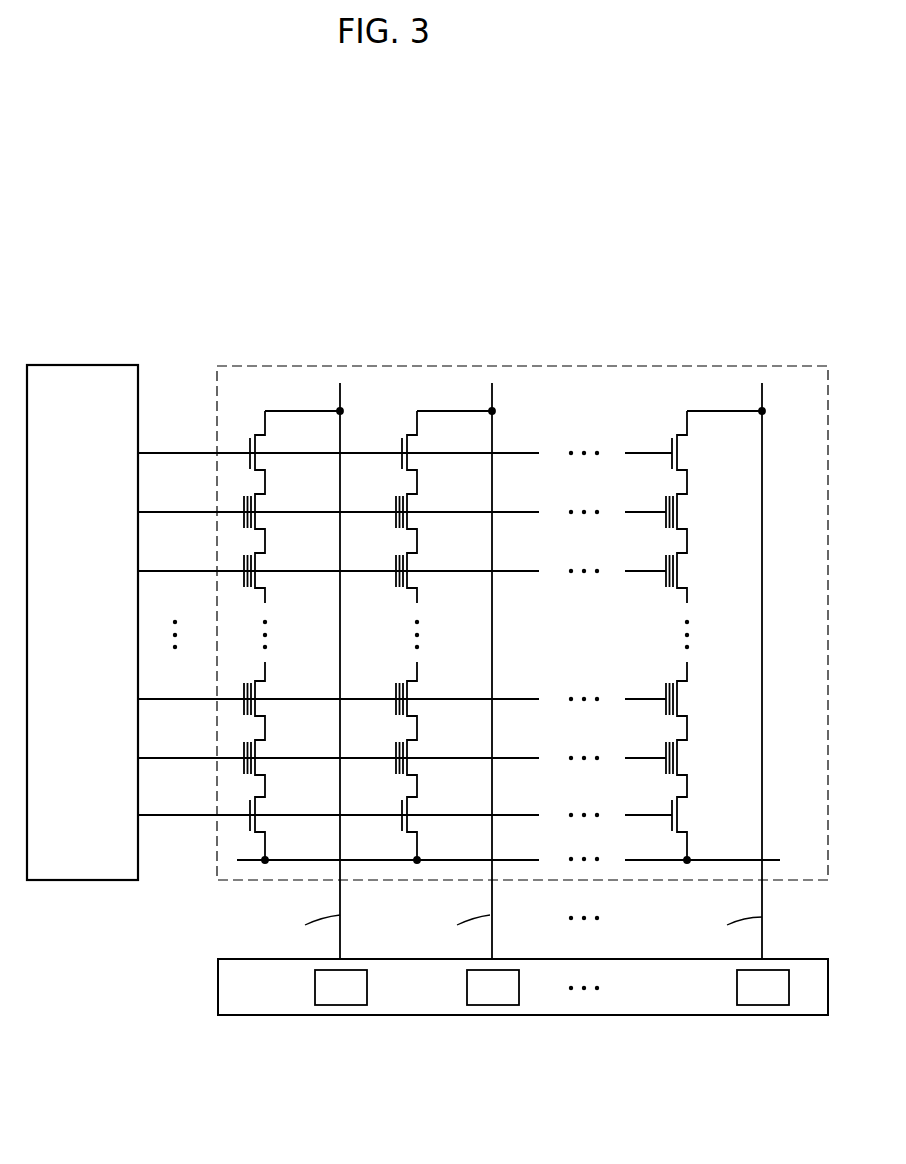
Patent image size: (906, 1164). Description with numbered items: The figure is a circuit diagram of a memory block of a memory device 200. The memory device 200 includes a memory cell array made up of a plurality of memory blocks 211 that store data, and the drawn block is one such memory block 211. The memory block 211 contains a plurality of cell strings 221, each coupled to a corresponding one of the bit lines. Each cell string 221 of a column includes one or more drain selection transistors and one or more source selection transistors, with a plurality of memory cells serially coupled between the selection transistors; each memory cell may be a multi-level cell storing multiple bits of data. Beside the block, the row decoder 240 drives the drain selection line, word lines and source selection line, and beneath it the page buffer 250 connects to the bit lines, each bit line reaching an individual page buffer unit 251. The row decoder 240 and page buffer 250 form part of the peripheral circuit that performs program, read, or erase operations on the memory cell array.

The memory device 200 is at (805, 277).
The memory block 211 is at (727, 365).
The cell string 221 is at (255, 412).
The row decoder 240 is at (84, 365).
The page buffer 250 is at (218, 987).
The page buffer 251 is at (315, 987).